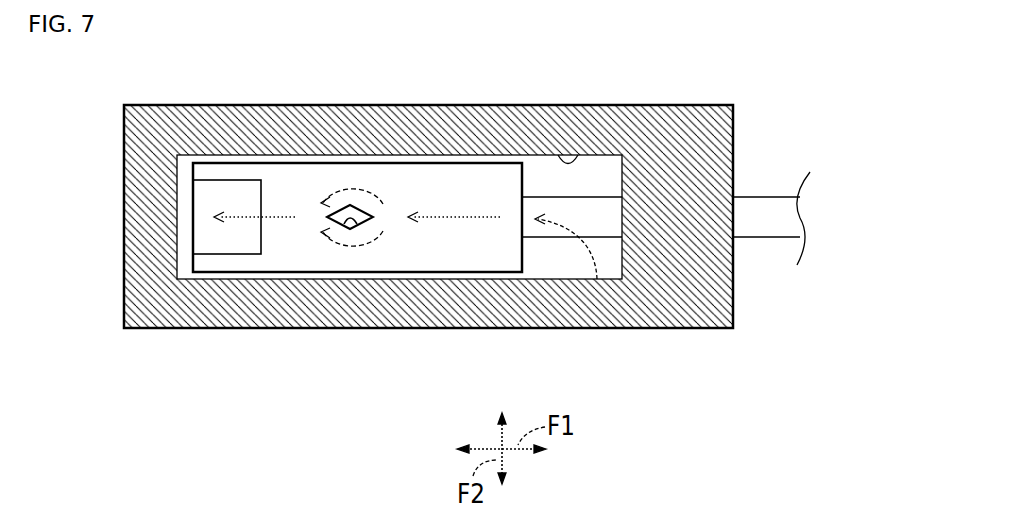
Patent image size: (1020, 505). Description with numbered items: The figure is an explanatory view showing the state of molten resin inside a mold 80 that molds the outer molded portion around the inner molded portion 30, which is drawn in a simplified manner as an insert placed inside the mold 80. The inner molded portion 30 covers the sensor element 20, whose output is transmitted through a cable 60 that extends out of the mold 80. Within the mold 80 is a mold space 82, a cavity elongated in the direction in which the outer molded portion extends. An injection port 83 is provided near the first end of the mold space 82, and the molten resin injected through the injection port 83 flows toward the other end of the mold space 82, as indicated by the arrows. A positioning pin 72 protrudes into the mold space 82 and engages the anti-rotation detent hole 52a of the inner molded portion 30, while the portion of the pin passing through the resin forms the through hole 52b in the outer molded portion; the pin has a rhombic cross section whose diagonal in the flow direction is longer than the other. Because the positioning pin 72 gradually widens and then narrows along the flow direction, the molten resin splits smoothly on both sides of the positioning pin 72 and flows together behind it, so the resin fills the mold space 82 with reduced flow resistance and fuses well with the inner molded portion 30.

The sensor element 20 is at (228, 180).
The inner molded portion 30 is at (455, 163).
The anti-rotation detent hole 52a is at (393, 303).
The through hole 52b is at (355, 229).
The cable 60 is at (763, 197).
The positioning pin 72 is at (353, 205).
The mold 80 is at (663, 105).
The mold space 82 is at (570, 163).
The injection port 83 is at (600, 332).